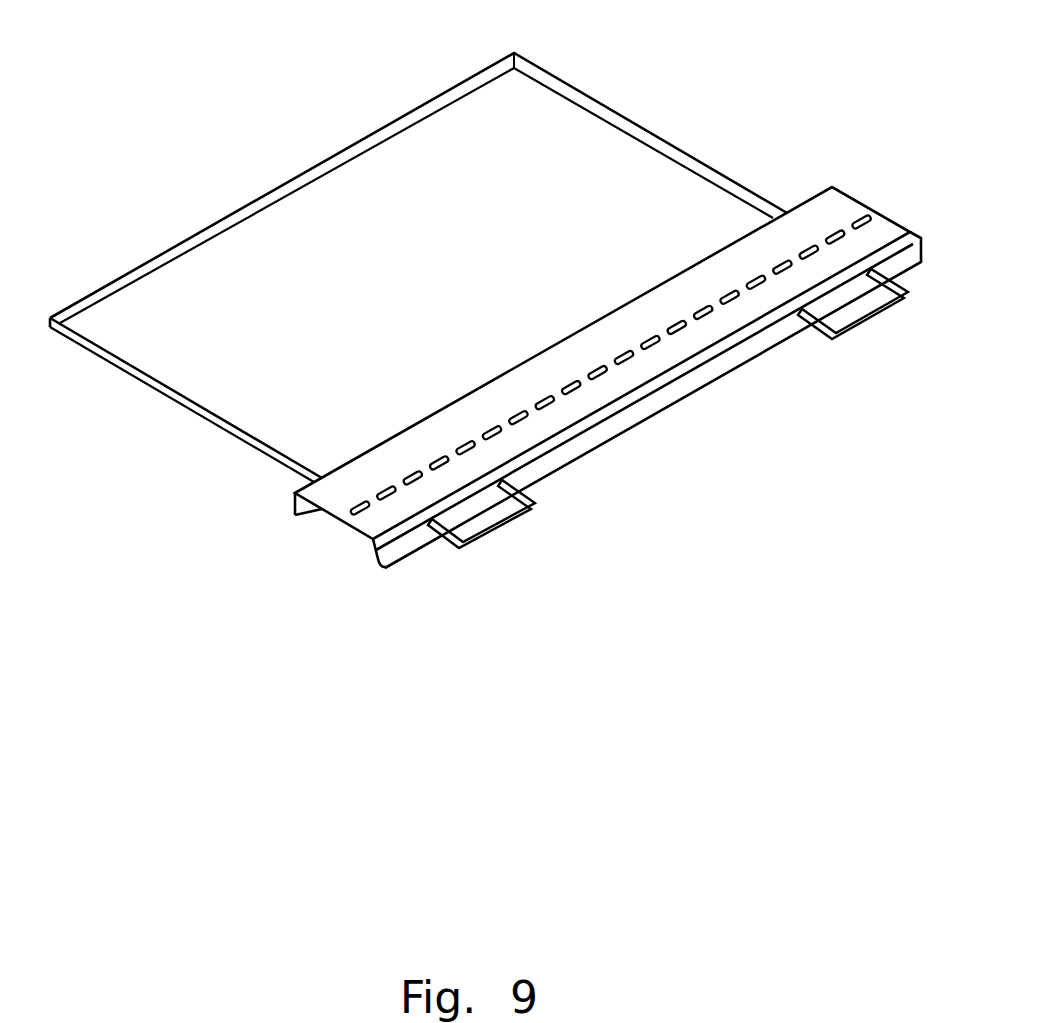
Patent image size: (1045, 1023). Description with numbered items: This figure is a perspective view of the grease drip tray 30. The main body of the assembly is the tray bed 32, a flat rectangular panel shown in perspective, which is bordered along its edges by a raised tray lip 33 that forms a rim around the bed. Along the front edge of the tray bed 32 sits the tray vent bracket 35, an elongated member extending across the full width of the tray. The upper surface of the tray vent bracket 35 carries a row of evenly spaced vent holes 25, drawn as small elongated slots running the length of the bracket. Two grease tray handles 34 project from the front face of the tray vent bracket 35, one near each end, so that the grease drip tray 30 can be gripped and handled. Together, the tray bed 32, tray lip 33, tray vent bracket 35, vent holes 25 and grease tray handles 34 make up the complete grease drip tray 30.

The vent holes 25 is at (567, 401).
The grease drip tray 30 is at (418, 275).
The tray bed 32 is at (418, 241).
The tray lip 33 is at (592, 100).
The grease tray handles 34 is at (514, 528).
The tray vent bracket 35 is at (365, 475).